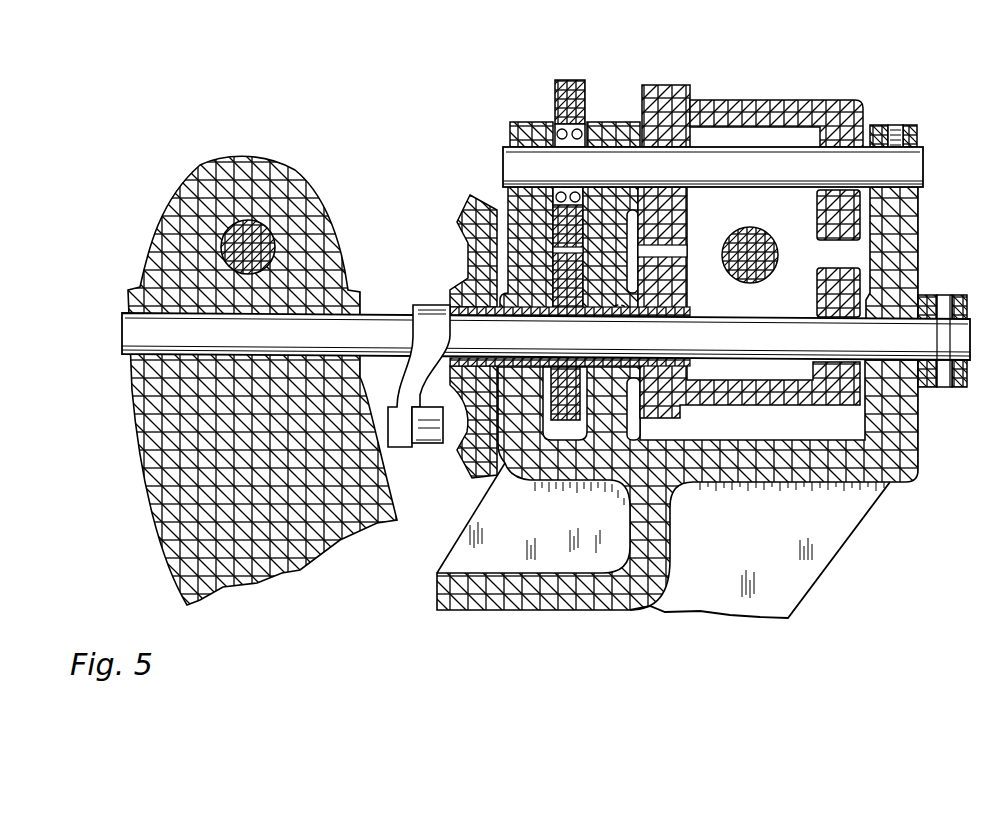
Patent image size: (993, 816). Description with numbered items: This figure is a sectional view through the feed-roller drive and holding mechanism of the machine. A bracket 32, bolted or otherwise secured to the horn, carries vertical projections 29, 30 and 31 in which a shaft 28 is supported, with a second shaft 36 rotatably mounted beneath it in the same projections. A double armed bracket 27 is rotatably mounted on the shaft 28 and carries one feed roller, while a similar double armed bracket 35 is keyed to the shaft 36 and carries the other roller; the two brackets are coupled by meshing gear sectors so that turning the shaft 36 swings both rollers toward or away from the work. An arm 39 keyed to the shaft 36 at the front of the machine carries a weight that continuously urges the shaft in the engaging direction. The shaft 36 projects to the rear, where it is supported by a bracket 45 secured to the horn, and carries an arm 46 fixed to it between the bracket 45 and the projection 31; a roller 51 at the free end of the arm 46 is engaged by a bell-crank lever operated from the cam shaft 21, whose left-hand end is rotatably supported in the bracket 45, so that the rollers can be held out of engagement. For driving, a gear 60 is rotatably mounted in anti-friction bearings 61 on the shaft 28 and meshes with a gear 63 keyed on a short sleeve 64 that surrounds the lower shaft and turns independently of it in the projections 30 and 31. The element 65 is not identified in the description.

The cam shaft 21 is at (233, 246).
The double armed bracket 27 is at (735, 100).
The shaft 28 is at (506, 160).
The vertical projection 29 is at (906, 125).
The vertical projection 30 is at (623, 120).
The vertical projection 31 is at (512, 122).
The bracket 32 is at (862, 512).
The double armed bracket 35 is at (754, 405).
The shaft 36 is at (120, 330).
The arm 39 is at (935, 392).
The bracket 45 is at (142, 437).
The arm 46 is at (440, 323).
The roller 51 is at (432, 442).
The gear 60 is at (568, 80).
The anti-friction bearings 61 is at (598, 132).
The gear 63 is at (575, 415).
The sleeve 64 is at (640, 310).
The lever 65 is at (470, 212).